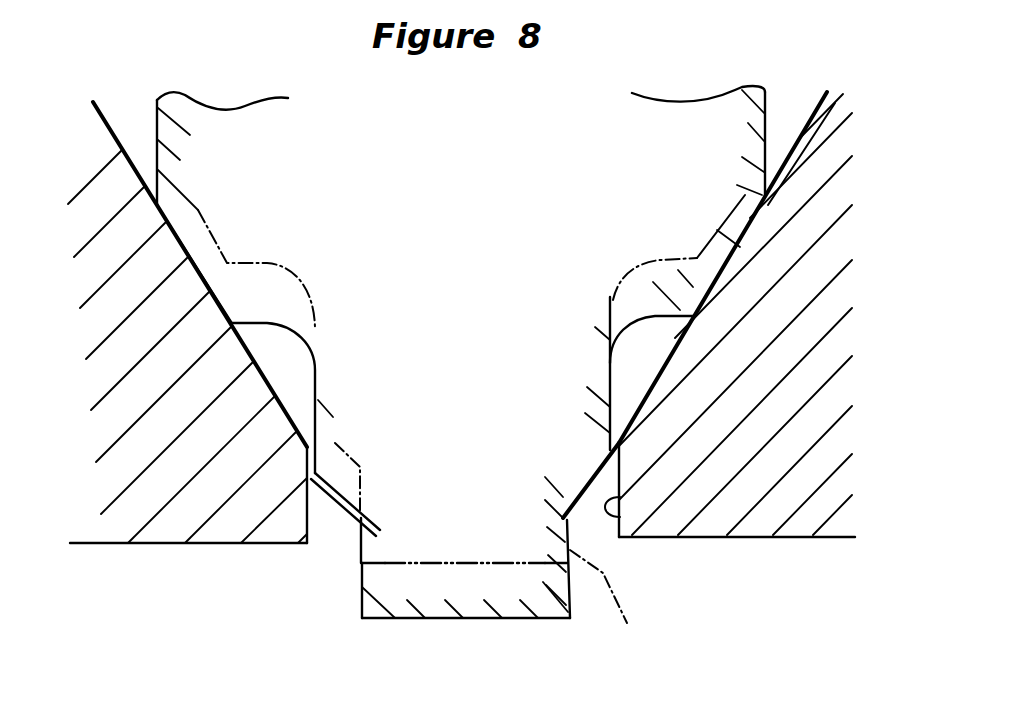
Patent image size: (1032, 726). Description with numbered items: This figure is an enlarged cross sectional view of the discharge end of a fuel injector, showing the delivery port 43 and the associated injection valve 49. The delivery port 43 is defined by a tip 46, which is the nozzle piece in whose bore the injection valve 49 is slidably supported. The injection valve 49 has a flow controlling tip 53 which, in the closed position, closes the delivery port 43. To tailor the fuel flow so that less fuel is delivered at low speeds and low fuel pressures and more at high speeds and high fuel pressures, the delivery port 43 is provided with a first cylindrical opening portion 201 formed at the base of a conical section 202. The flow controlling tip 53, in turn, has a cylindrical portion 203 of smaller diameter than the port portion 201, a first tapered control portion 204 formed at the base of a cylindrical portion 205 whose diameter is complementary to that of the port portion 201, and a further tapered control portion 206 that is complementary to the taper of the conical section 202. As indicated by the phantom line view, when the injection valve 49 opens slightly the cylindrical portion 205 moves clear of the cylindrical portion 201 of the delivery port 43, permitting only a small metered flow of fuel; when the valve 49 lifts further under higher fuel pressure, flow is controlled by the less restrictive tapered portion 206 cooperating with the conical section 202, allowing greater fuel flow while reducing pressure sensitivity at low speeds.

The delivery port 43 is at (325, 524).
The tip 46 is at (745, 432).
The injection valve 49 is at (753, 76).
The flow controlling tip 53 is at (381, 620).
The first cylindrical opening portion 201 is at (624, 528).
The conical section 202 is at (693, 300).
The cylindrical portion 203 is at (570, 597).
The first tapered control portion 204 is at (583, 443).
The cylindrical portion 205 is at (610, 363).
The further tapered control portion 206 is at (740, 245).